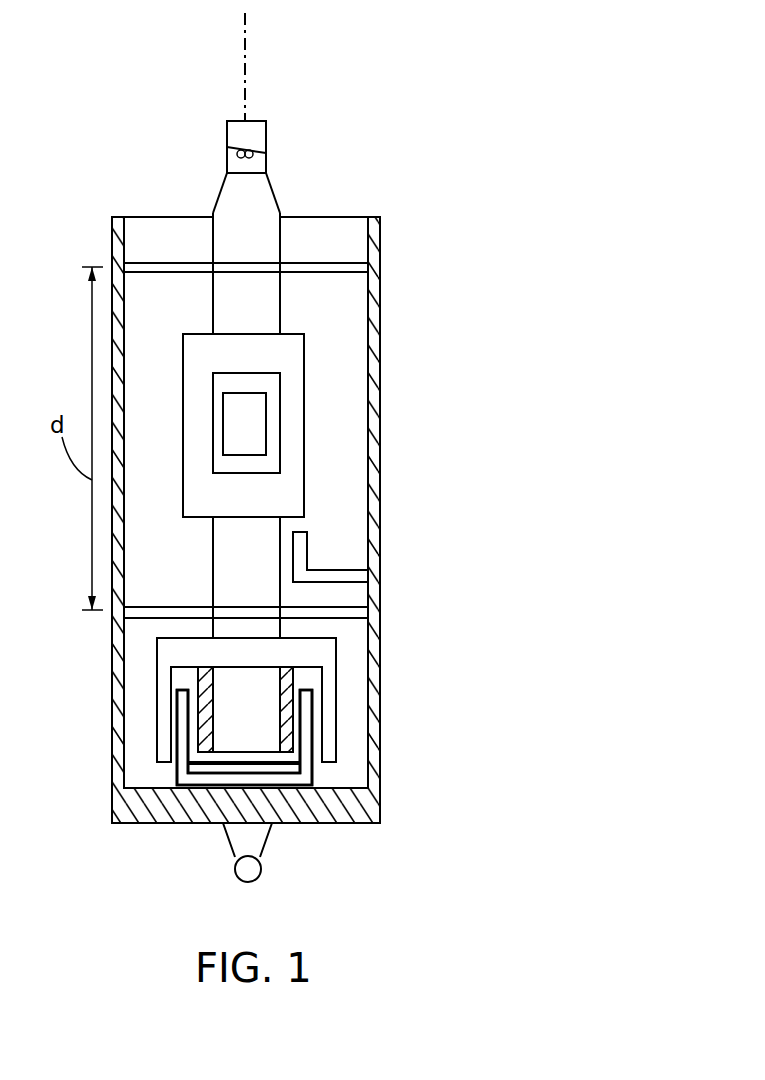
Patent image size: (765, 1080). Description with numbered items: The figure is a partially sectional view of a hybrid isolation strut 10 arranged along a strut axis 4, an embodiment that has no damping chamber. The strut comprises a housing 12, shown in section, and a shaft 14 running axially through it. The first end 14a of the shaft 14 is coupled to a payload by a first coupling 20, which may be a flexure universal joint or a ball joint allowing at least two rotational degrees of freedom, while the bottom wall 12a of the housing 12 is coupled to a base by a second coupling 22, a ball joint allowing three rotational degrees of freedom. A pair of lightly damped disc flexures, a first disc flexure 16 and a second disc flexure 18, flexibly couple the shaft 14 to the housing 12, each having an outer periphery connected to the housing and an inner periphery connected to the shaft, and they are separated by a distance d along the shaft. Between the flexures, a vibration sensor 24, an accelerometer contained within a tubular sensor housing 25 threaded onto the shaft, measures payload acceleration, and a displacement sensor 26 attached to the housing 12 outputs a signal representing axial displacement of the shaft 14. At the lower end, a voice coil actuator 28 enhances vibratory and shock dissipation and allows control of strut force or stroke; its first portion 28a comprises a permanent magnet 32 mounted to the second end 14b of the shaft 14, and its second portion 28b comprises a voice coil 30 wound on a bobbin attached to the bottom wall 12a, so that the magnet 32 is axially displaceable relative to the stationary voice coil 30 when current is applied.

The strut axis 4 is at (247, 50).
The hybrid isolation strut 10 is at (366, 105).
The housing 12 is at (380, 323).
The bottom wall 12a is at (177, 823).
The shaft 14 is at (213, 288).
The first end 14a is at (218, 200).
The second end 14b is at (230, 640).
The first disc flexure 16 is at (313, 263).
The second disc flexure 18 is at (191, 607).
The first coupling 20 is at (227, 133).
The second coupling 22 is at (258, 878).
The vibration sensor 24 is at (223, 416).
The sensor housing 25 is at (304, 373).
The displacement sensor 26 is at (308, 552).
The voice coil actuator 28 is at (350, 700).
The first portion 28a is at (337, 678).
The second portion 28b is at (313, 775).
The voice coil 30 is at (178, 724).
The permanent magnet 32 is at (210, 668).